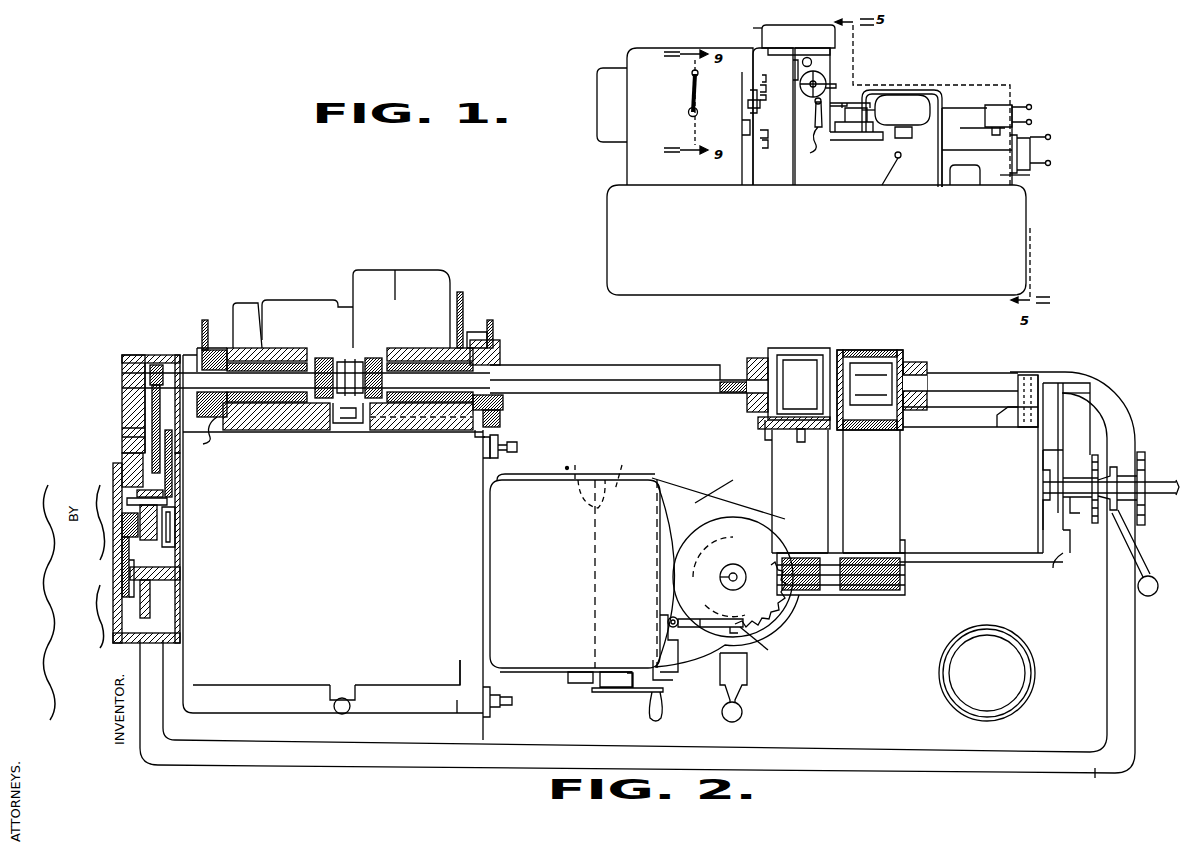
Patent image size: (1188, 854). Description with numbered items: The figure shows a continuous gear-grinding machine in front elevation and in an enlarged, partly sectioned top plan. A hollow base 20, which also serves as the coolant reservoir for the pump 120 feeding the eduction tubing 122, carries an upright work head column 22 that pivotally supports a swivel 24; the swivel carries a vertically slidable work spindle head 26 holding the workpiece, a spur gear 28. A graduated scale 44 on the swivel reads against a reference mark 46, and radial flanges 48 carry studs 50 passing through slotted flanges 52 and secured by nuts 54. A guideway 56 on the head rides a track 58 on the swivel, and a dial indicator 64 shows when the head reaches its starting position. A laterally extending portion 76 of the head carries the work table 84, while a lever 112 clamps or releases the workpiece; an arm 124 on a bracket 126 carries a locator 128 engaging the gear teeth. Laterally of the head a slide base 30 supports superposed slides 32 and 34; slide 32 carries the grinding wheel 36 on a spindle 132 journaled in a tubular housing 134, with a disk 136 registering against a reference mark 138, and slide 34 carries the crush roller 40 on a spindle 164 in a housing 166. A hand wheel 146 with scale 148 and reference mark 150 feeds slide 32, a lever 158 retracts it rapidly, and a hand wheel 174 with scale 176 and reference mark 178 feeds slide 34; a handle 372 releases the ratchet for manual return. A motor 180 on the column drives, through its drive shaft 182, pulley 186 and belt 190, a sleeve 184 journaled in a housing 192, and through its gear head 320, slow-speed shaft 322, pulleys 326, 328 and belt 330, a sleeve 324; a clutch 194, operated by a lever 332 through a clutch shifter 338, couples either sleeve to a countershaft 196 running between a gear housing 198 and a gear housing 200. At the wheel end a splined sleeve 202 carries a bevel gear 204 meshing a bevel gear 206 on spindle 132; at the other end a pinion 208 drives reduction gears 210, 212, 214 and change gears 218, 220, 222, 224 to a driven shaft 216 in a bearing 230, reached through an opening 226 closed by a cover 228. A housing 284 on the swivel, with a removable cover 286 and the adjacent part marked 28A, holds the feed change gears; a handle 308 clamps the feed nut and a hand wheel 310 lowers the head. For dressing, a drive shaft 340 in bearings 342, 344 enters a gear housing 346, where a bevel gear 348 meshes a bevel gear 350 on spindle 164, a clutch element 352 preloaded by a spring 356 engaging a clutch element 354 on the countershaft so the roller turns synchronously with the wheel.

In FIG. 1, the base 20 is at (610, 204).
In FIG. 2, the base 20 is at (1098, 776).
In FIG. 1, the work head column 22 is at (632, 53).
In FIG. 2, the work head column 22 is at (333, 547).
In FIG. 1, the swivel 24 is at (762, 53).
In FIG. 2, the swivel 24 is at (545, 481).
In FIG. 1, the work spindle head 26 is at (830, 66).
In FIG. 2, the work spindle head 26 is at (654, 479).
In FIG. 1, the spur gear 28 is at (874, 96).
In FIG. 2, the spur gear 28 is at (791, 614).
In FIG. 1, the motor housing 28A is at (798, 40).
In FIG. 1, the slide base 30 is at (1032, 176).
In FIG. 2, the slide base 30 is at (1077, 433).
In FIG. 1, the slide 32 is at (962, 126).
In FIG. 1, the slide 34 is at (948, 108).
In FIG. 2, the slide 34 is at (981, 468).
In FIG. 2, the grinding wheel 36 is at (810, 593).
In FIG. 2, the crush roller 40 is at (871, 591).
In FIG. 1, the graduated scale 44 is at (755, 96).
In FIG. 1, the stationary reference mark 46 is at (754, 104).
In FIG. 1, the radial flanges 48 is at (756, 127).
In FIG. 2, the radial flanges 48 is at (458, 708).
In FIG. 1, the studs 50 is at (763, 133).
In FIG. 2, the studs 50 is at (512, 700).
In FIG. 1, the radial flanges 52 is at (763, 98).
In FIG. 1, the nuts 54 is at (764, 147).
In FIG. 2, the nuts 54 is at (505, 708).
In FIG. 2, the vertical guideway 56 is at (584, 479).
In FIG. 2, the vertical guide or track 58 is at (624, 469).
In FIG. 1, the dial indicator 64 is at (835, 57).
In FIG. 1, the laterally extending portion 76 is at (856, 135).
In FIG. 2, the laterally extending portion 76 is at (714, 491).
In FIG. 2, the work table 84 is at (723, 524).
In FIG. 1, the manually operable lever 112 is at (886, 187).
In FIG. 2, the manually operable lever 112 is at (748, 694).
In FIG. 1, the pump 120 is at (972, 190).
In FIG. 2, the pump 120 is at (1013, 660).
In FIG. 1, the eduction tubing 122 is at (910, 90).
In FIG. 2, the arm 124 is at (716, 629).
In FIG. 2, the bracket 126 is at (690, 680).
In FIG. 1, the locator 128 is at (902, 116).
In FIG. 2, the locator 128 is at (768, 650).
In FIG. 2, the horizontal spindle 132 is at (770, 557).
In FIG. 2, the tubular housing 134 is at (772, 473).
In FIG. 2, the disk 136 is at (802, 443).
In FIG. 2, the stationary reference mark 138 is at (772, 432).
In FIG. 1, the hand wheel 146 is at (1050, 146).
In FIG. 2, the hand wheel 146 is at (1145, 462).
In FIG. 2, the graduated scale 148 is at (1132, 480).
In FIG. 2, the stationary reference mark 150 is at (1126, 504).
In FIG. 2, the manually operable lever 158 is at (1136, 556).
In FIG. 2, the spindle 164 is at (890, 560).
In FIG. 2, the horizontal tubular housing 166 is at (902, 507).
In FIG. 1, the hand wheel 174 is at (1032, 110).
In FIG. 2, the hand wheel 174 is at (1100, 470).
In FIG. 2, the graduated scale 176 is at (1092, 503).
In FIG. 2, the stationary reference mark 178 is at (1092, 478).
In FIG. 2, the motor 180 is at (306, 300).
In FIG. 2, the drive shaft 182 is at (220, 348).
In FIG. 2, the sleeve 184 is at (296, 352).
In FIG. 2, the pulley 186 is at (206, 346).
In FIG. 2, the endless belt 190 is at (202, 358).
In FIG. 2, the horizontal housing 192 is at (256, 312).
In FIG. 2, the multiple disk clutch 194 is at (350, 365).
In FIG. 2, the countershaft 196 is at (655, 372).
In FIG. 1, the gear housing 198 is at (597, 78).
In FIG. 2, the gear housing 198 is at (125, 402).
In FIG. 2, the gear housing 200 is at (774, 350).
In FIG. 2, the sleeve 202 is at (800, 366).
In FIG. 2, the bevel gear 204 is at (749, 366).
In FIG. 2, the bevel gear 206 is at (758, 420).
In FIG. 2, the pinion 208 is at (148, 378).
In FIG. 2, the reduction gear 210 is at (122, 455).
In FIG. 2, the reduction gear 212 is at (175, 450).
In FIG. 2, the reduction gear 214 is at (165, 494).
In FIG. 2, the driven shaft 216 is at (172, 576).
In FIG. 2, the change gear 218 is at (128, 502).
In FIG. 2, the change gear 220 is at (160, 522).
In FIG. 2, the change gear 222 is at (122, 523).
In FIG. 2, the change gear 224 is at (122, 546).
In FIG. 2, the opening 226 is at (122, 478).
In FIG. 2, the removable cover 228 is at (127, 576).
In FIG. 2, the bearing 230 is at (175, 541).
In FIG. 2, the housing 284 is at (575, 574).
In FIG. 1, the removable cover 286 is at (760, 26).
In FIG. 1, the manually operable handle 308 is at (816, 133).
In FIG. 1, the hand wheel 310 is at (830, 78).
In FIG. 2, the hand wheel 310 is at (626, 694).
In FIG. 2, the integral gear head 320 is at (436, 280).
In FIG. 2, the slow-speed drive shaft 322 is at (471, 315).
In FIG. 2, the sleeve 324 is at (418, 432).
In FIG. 2, the pulley 326 is at (496, 345).
In FIG. 2, the pulley 328 is at (503, 402).
In FIG. 2, the endless belt 330 is at (500, 418).
In FIG. 1, the lever 332 is at (689, 97).
In FIG. 2, the lever 332 is at (350, 713).
In FIG. 2, the clutch shifter 338 is at (345, 426).
In FIG. 2, the drive shaft 340 is at (985, 378).
In FIG. 2, the bearing 342 is at (925, 365).
In FIG. 2, the bearing 344 is at (1041, 385).
In FIG. 2, the gear housing 346 is at (852, 358).
In FIG. 2, the bevel gear 348 is at (895, 360).
In FIG. 2, the bevel gear 350 is at (925, 416).
In FIG. 2, the clutch element 352 is at (857, 364).
In FIG. 2, the clutch element 354 is at (838, 350).
In FIG. 2, the compression spring 356 is at (884, 350).
In FIG. 2, the handle 372 is at (1056, 568).